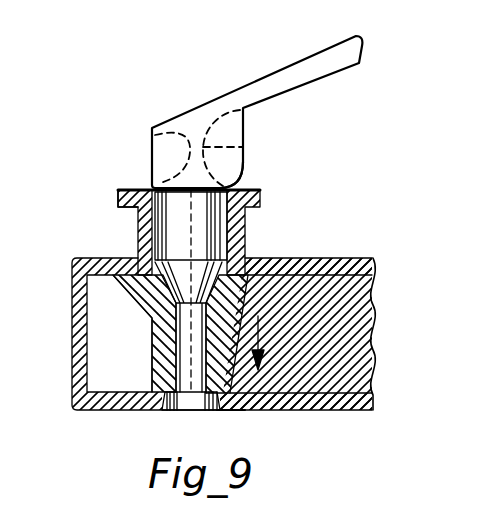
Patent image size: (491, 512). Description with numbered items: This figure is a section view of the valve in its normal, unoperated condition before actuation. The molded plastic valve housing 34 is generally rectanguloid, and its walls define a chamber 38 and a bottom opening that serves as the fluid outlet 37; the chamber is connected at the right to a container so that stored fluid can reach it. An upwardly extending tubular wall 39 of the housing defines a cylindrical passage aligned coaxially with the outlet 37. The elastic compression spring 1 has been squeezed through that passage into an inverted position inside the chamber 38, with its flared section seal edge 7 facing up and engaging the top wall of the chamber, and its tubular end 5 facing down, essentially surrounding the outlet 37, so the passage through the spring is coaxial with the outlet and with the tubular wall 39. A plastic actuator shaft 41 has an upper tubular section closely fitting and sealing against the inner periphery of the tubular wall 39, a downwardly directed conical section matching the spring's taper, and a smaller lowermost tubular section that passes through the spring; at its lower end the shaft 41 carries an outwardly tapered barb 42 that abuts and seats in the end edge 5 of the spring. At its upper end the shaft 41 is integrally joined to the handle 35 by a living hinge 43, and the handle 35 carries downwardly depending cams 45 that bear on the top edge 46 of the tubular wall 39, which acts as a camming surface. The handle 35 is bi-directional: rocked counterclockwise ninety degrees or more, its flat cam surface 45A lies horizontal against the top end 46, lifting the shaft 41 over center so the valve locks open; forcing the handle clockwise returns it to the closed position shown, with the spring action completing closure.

The compression spring 1 is at (252, 297).
The tubular end 5 is at (230, 393).
The flared section seal edge 7 is at (263, 282).
The valve housing 34 is at (72, 345).
The handle 35 is at (300, 62).
The fluid outlet 37 is at (216, 411).
The chamber 38 is at (131, 358).
The tubular wall 39 is at (138, 232).
The actuator shaft 41 is at (200, 232).
The barb 42 is at (184, 411).
The living hinge 43 is at (243, 143).
The cam 45 is at (233, 186).
The flat cam surface 45A is at (150, 153).
The top edge 46 is at (130, 188).